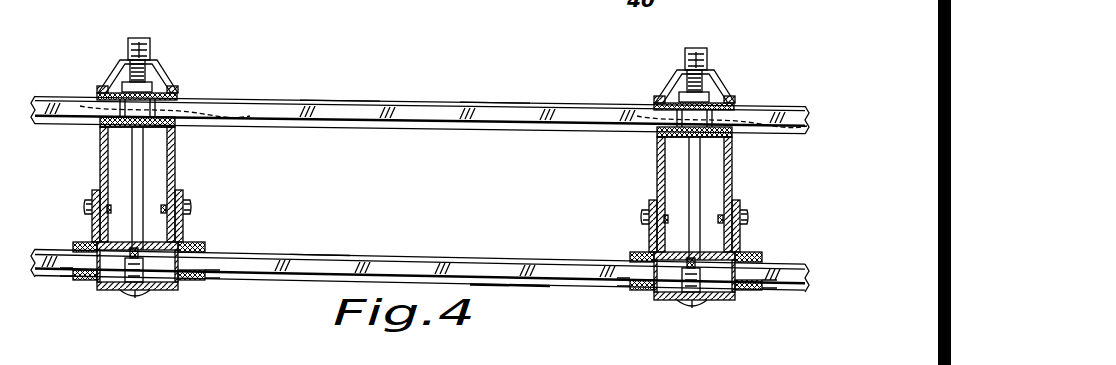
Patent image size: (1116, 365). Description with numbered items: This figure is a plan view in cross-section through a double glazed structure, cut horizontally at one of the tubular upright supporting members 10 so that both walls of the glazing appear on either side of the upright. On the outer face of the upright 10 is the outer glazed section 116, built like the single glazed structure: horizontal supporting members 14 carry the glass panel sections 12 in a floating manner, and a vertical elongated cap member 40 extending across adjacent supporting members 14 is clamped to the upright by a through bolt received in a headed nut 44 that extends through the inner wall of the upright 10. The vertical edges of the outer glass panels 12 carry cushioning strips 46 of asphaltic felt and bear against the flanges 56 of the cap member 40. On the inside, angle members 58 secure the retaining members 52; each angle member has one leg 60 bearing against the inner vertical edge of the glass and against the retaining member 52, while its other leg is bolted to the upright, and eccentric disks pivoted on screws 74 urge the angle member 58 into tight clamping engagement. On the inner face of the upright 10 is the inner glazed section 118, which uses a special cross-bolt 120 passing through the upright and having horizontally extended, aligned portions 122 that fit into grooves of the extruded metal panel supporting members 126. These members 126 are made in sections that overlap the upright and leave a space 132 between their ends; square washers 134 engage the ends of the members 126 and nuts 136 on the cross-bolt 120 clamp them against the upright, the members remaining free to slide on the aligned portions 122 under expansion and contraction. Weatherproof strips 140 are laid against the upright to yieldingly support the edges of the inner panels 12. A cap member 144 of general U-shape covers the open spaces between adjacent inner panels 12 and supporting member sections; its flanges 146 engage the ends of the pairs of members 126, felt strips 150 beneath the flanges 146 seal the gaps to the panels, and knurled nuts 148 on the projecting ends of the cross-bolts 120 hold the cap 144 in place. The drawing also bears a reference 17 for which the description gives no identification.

The upright fixed supporting member 10 is at (175, 168).
The panel section 12 is at (420, 173).
The horizontal supporting member 14 is at (325, 285).
The cross member core 17 is at (410, 113).
The cap member 40 is at (110, 289).
The headed nut 44 is at (138, 292).
The cushioning strip 46 is at (203, 273).
The retaining member 52 is at (322, 253).
The flange 56 is at (83, 289).
The angle member 58 is at (95, 228).
The leg 60 is at (76, 246).
The screw 74 is at (88, 207).
The outer glazed section 116 is at (516, 291).
The inner glazed section 118 is at (497, 92).
The cross-bolt 120 is at (133, 160).
The aligned portion 122 is at (95, 100).
The panel supporting member 126 is at (340, 92).
The space 132 is at (110, 124).
The square washer 134 is at (152, 88).
The nut 136 is at (146, 70).
The weatherproof strip 140 is at (172, 122).
The cap member 144 is at (120, 63).
The flange 146 is at (103, 87).
The knurled nut 148 is at (130, 40).
The felt strip 150 is at (177, 97).